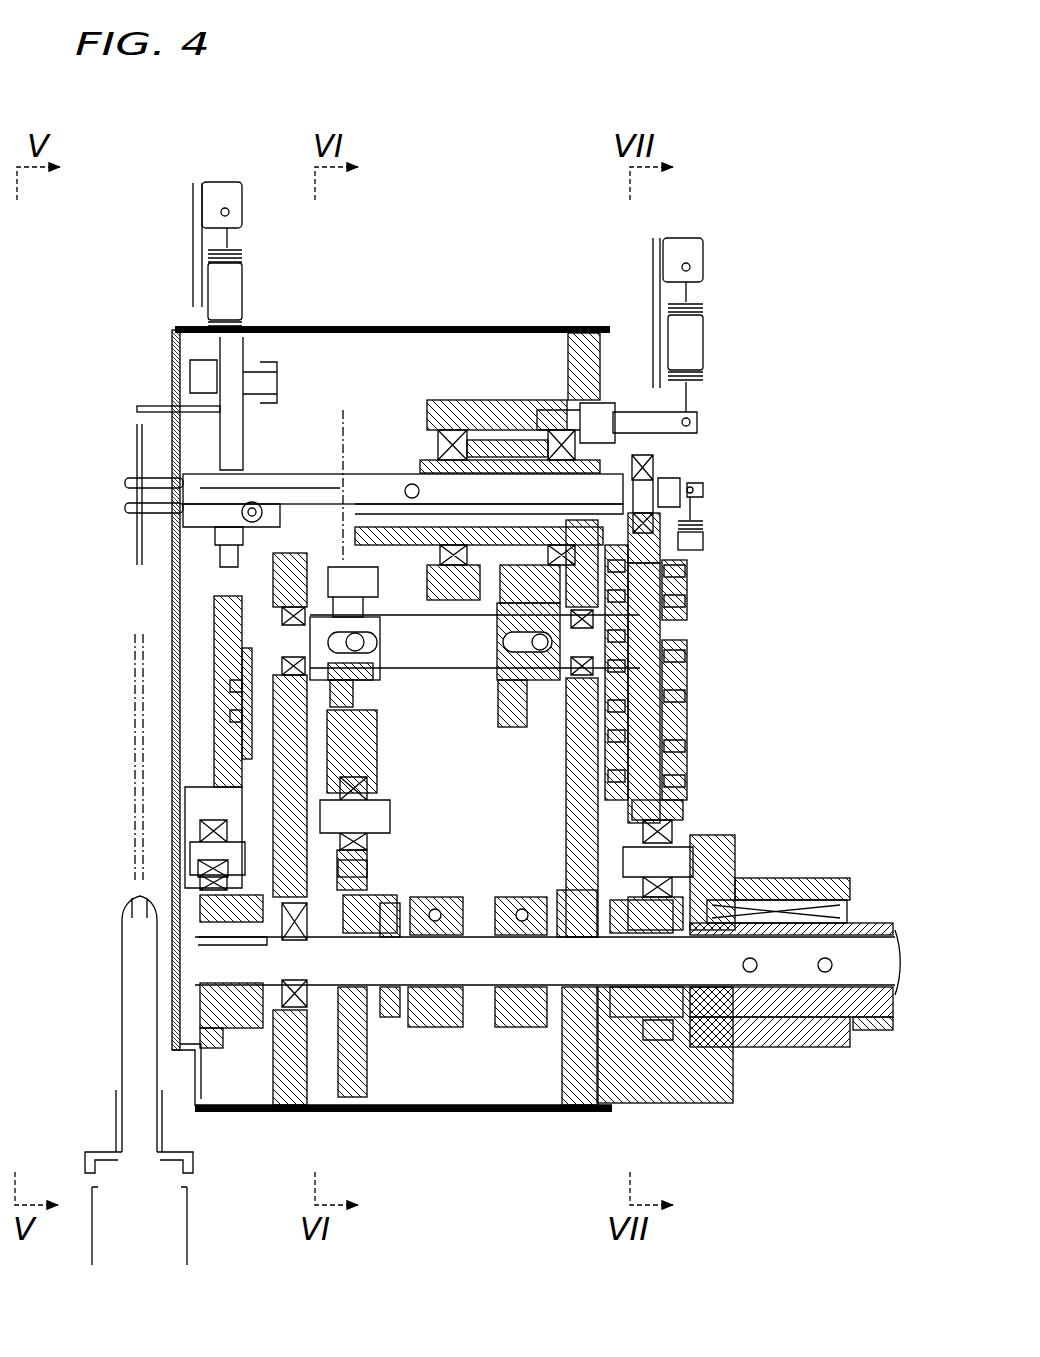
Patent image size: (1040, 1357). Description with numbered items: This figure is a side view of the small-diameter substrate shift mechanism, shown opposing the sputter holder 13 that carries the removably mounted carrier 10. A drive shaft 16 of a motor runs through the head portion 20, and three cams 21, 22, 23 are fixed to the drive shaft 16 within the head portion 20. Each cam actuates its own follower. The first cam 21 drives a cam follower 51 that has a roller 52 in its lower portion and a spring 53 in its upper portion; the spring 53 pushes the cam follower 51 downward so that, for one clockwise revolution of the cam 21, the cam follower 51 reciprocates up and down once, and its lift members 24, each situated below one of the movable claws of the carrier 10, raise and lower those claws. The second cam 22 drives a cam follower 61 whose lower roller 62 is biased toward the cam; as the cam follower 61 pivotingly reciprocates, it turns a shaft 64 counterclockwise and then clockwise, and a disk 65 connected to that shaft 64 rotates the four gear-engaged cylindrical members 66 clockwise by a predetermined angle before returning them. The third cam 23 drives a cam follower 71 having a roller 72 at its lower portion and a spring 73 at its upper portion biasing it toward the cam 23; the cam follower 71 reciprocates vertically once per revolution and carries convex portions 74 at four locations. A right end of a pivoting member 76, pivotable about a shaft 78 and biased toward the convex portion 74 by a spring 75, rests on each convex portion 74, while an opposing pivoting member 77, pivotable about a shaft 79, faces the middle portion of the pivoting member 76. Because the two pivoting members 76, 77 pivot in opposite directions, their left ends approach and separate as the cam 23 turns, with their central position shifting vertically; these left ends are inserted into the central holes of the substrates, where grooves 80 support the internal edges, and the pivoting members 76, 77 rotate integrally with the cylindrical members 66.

The carrier 10 is at (135, 792).
The sputter holder 13 is at (135, 972).
The drive shaft 16 is at (790, 975).
The head portion 20 is at (472, 1112).
The cam 21 is at (213, 1032).
The cam 22 is at (350, 1080).
The cam 23 is at (660, 1042).
The lift member 24 is at (150, 408).
The cam follower 51 is at (218, 755).
The roller 52 is at (197, 898).
The spring 53 is at (244, 258).
The cam follower 61 is at (370, 683).
The roller 62 is at (365, 845).
The shaft 64 is at (455, 662).
The disk 65 is at (500, 730).
The cylindrical member 66 is at (495, 403).
The cam follower 71 is at (600, 770).
The roller 72 is at (672, 828).
The spring 73 is at (705, 305).
The convex portion 74 is at (660, 540).
The spring 75 is at (706, 524).
The pivoting member 76 is at (640, 458).
The pivoting member 77 is at (125, 532).
The shaft 78 is at (412, 478).
The shaft 79 is at (215, 540).
The groove 80 is at (128, 482).